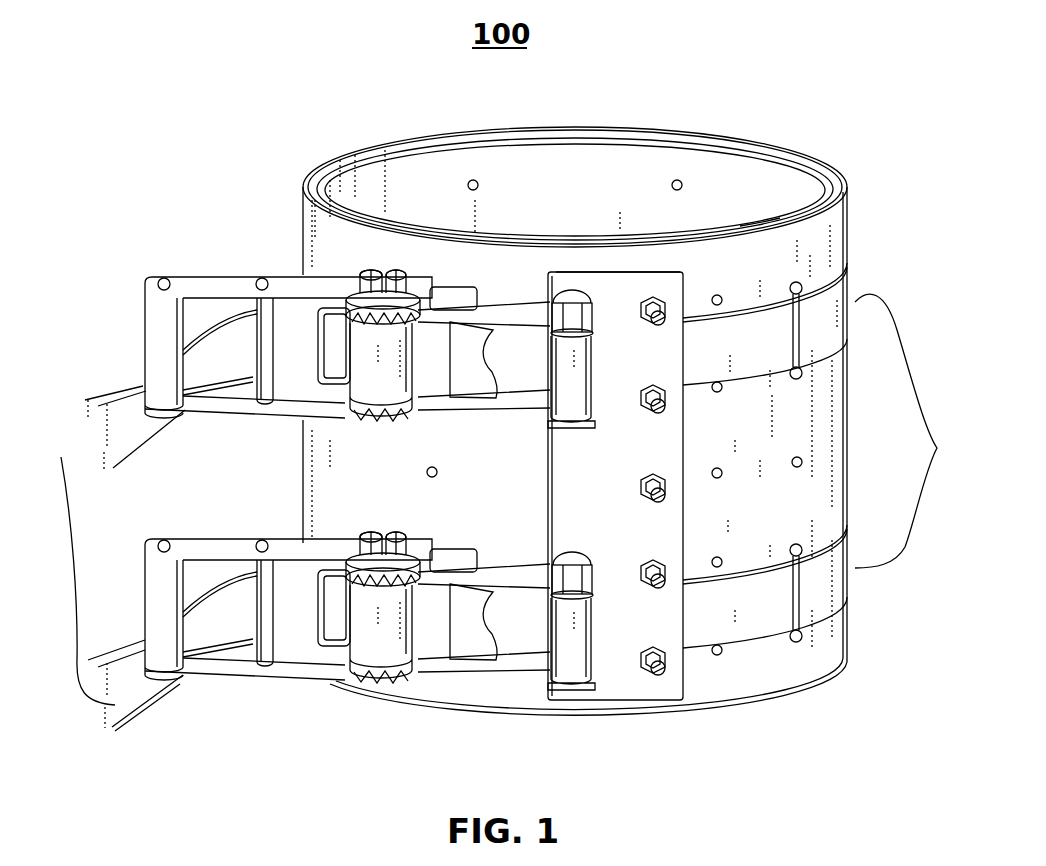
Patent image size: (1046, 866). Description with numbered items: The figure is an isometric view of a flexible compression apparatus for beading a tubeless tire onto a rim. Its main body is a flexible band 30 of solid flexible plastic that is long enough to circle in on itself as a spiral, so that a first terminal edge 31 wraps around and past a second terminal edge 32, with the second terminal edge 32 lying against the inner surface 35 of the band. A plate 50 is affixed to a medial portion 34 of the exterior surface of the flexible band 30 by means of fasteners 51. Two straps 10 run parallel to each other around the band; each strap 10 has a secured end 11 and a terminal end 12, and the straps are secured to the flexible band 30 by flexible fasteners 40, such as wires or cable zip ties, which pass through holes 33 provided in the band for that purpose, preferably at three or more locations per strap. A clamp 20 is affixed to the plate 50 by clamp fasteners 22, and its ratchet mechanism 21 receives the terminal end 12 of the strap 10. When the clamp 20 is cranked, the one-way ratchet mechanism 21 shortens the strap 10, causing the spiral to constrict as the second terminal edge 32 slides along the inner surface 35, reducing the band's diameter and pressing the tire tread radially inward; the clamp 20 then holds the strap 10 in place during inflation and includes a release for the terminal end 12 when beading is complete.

The strap 10 is at (827, 471).
The secured end 11 is at (695, 350).
The terminal end 12 is at (103, 452).
The clamp 20 is at (223, 278).
The ratchet mechanism 21 is at (365, 295).
The clamp fasteners 22 is at (553, 293).
The flexible band 30 is at (303, 468).
The first terminal edge 31 is at (421, 133).
The second terminal edge 32 is at (748, 216).
The holes 33 is at (800, 467).
The medial portion 34 is at (608, 265).
The inner surface 35 is at (563, 148).
The flexible fasteners 40 is at (795, 323).
The plate 50 is at (620, 700).
The fasteners 51 is at (642, 673).